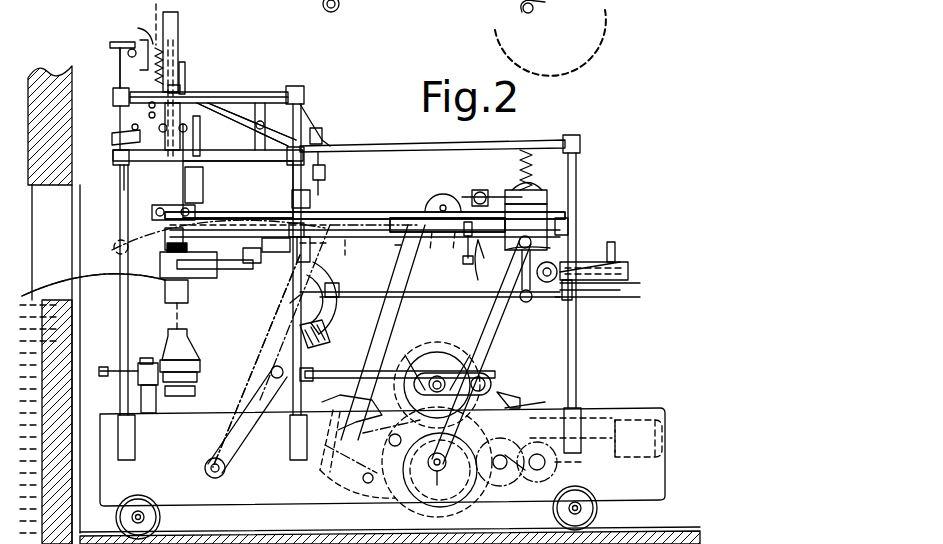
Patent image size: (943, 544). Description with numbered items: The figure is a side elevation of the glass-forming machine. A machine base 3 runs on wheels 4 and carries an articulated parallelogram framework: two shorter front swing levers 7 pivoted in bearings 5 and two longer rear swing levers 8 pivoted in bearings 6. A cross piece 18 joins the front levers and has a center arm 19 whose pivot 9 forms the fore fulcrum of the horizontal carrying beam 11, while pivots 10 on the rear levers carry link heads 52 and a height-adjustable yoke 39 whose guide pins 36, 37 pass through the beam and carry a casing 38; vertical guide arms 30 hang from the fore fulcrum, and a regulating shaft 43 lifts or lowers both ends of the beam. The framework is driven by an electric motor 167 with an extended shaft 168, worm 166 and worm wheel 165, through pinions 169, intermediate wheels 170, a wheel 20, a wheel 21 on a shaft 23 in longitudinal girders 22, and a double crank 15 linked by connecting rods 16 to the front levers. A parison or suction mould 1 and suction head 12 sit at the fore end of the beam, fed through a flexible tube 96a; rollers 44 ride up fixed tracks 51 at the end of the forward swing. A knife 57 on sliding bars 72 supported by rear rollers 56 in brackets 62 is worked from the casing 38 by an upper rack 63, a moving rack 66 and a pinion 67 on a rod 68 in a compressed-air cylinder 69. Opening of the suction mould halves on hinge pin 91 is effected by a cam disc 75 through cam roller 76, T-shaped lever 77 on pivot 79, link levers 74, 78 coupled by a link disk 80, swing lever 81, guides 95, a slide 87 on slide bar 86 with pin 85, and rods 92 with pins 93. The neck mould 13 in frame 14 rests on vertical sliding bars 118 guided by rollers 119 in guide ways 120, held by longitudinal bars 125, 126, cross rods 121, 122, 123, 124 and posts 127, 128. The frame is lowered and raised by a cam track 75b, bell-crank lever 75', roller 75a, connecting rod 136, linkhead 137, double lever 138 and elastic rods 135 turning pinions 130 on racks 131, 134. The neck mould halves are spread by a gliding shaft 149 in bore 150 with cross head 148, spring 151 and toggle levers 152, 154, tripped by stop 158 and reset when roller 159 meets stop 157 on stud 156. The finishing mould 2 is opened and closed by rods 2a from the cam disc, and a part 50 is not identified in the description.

The parison mould 1 is at (165, 296).
The finishing mould 2 is at (166, 350).
The rods 2a is at (102, 366).
The machine base 3 is at (238, 497).
The wheels 4 is at (590, 510).
The bearings 5 is at (209, 472).
The bearings 6 is at (437, 472).
The frontal swing levers 7 is at (287, 377).
The rear swing levers 8 is at (494, 332).
The pivot 9 is at (318, 250).
The pivots 10 is at (550, 249).
The carrying beam 11 is at (405, 228).
The suction head 12 is at (165, 235).
The neck mold 13 is at (160, 262).
The frame 14 is at (167, 246).
The double crank 15 is at (445, 352).
The connecting rods 16 is at (345, 372).
The cross piece 18 is at (327, 340).
The center arm 19 is at (334, 303).
The wheel 20 is at (396, 497).
The wheel 21 is at (457, 350).
The longitudinal girders 22 is at (508, 402).
The shaft 23 is at (426, 350).
The vertical guide arm 30 is at (338, 290).
The vertical guide pin 36 is at (498, 262).
The vertical guide pin 37 is at (562, 256).
The casing 38 is at (628, 285).
The transverse yoke 39 is at (547, 196).
The longitudinal regulating shaft 43 is at (398, 212).
The rollers 44 is at (547, 222).
The spring 50 is at (533, 172).
The fixed tracks 51 is at (348, 214).
The link heads 52 is at (568, 226).
The rear rollers 56 is at (537, 305).
The knife 57 is at (290, 303).
The brackets 62 is at (517, 306).
The upper rack 63 is at (569, 300).
The lower moving rack 66 is at (626, 294).
The pinion 67 is at (608, 296).
The rod 68 is at (616, 250).
The compressed-air cylinder 69 is at (620, 268).
The longitudinal sliding bars 72 is at (466, 266).
The link motion levers 74 is at (410, 312).
The cam disc 75 is at (494, 268).
The bell-crank lever 75' is at (315, 445).
The roller 75a is at (363, 477).
The track 75b is at (360, 503).
The cam roller 76 is at (485, 385).
The T-shaped lever 77 is at (446, 463).
The link motion levers 78 is at (380, 427).
The stationary pivot 79 is at (525, 410).
The link disk 80 is at (340, 408).
The swing lever 81 is at (443, 195).
The pin 85 is at (285, 232).
The slide bar 86 is at (278, 254).
The slide 87 is at (250, 263).
The hinge pin 91 is at (188, 290).
The rods 92 is at (230, 270).
The pins 93 is at (182, 310).
The guides 95 is at (466, 245).
The flexible tube 96a is at (476, 262).
The vertical sliding bars 118 is at (180, 18).
The rollers 119 is at (160, 208).
The lateral guide ways 120 is at (125, 172).
The cross rod 121 is at (118, 156).
The cross rod 122 is at (113, 98).
The cross rod 123 is at (305, 92).
The cross rod 124 is at (261, 163).
The upper longitudinal bar 125 is at (265, 92).
The lower longitudinal bar 126 is at (230, 208).
The post 127 is at (120, 226).
The post 128 is at (318, 135).
The pinions 130 is at (200, 152).
The racks 131 is at (186, 72).
The racks 134 is at (205, 178).
The elastic connecting rods 135 is at (207, 107).
The connecting rod 136 is at (324, 180).
The linkhead 137 is at (332, 142).
The double lever 138 is at (280, 122).
The cross head 148 is at (130, 128).
The vertically gliding shaft 149 is at (163, 32).
The bore 150 is at (181, 88).
The compressed helical spring 151 is at (165, 65).
The lever 152 is at (148, 108).
The lever 154 is at (140, 28).
The stud 156 is at (118, 72).
The stop 157 is at (110, 44).
The stop 158 is at (118, 140).
The roller 159 is at (128, 53).
The worm wheel 165 is at (560, 462).
The worm 166 is at (540, 438).
The electrical motor 167 is at (632, 420).
The extended shaft 168 is at (546, 463).
The pinions 169 is at (525, 470).
The intermediate wheels 170 is at (512, 492).